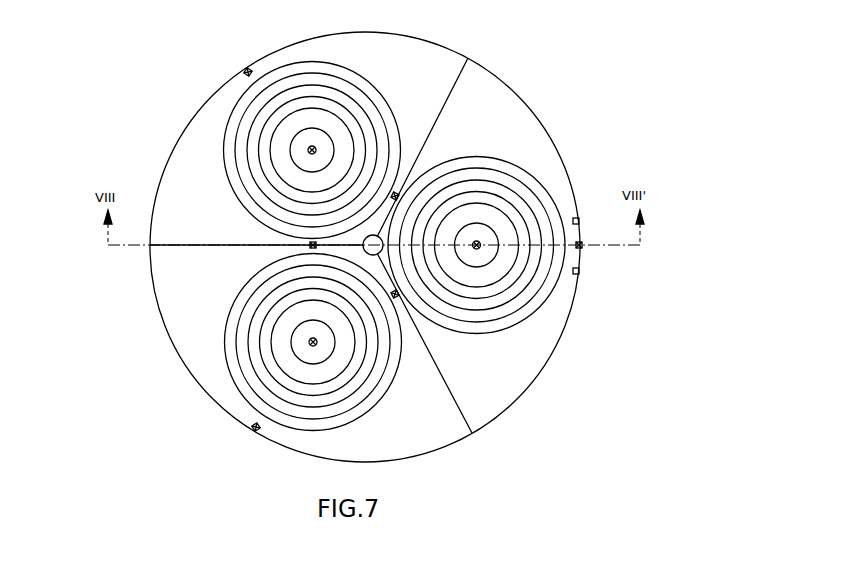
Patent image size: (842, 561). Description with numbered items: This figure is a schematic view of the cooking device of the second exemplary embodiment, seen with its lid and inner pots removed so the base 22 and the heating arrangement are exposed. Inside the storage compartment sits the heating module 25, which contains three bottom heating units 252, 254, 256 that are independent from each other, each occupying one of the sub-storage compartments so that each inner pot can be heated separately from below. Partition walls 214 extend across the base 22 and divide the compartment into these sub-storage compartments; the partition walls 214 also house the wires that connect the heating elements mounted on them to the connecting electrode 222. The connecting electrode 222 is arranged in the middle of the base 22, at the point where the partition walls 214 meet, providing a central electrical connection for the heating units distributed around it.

The base 22 is at (497, 386).
The partition walls 214 is at (457, 85).
The connecting electrode 222 is at (383, 241).
The heating module 25 is at (48, 165).
The bottom heating unit 252 is at (238, 152).
The bottom heating unit 254 is at (414, 253).
The bottom heating unit 256 is at (258, 341).